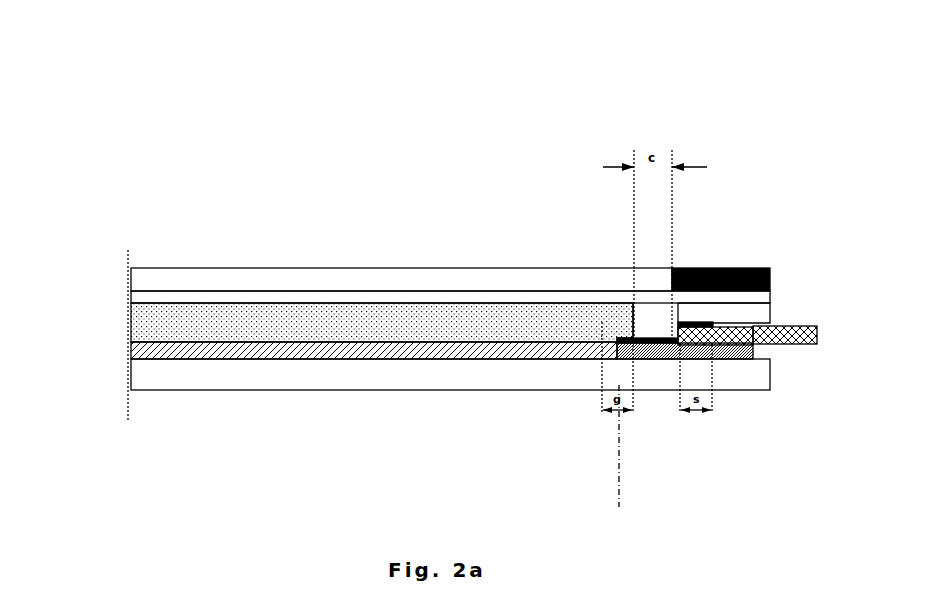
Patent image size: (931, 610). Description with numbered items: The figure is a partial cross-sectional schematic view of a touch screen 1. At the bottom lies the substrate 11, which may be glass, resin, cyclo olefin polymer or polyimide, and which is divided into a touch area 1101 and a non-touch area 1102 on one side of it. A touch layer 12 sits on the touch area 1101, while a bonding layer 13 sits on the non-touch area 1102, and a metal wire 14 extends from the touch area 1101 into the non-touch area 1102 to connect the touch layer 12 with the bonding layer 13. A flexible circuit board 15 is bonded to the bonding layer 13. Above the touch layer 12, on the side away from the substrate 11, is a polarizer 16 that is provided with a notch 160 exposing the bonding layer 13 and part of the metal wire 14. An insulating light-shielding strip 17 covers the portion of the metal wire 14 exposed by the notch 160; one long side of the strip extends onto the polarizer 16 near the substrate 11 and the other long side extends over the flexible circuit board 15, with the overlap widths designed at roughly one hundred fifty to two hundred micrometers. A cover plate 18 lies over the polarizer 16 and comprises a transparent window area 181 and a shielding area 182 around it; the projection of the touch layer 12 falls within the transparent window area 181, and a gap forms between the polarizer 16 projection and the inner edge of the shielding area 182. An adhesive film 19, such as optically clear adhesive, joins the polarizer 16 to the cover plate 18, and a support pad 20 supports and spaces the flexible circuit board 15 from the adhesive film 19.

The touch screen 1 is at (476, 115).
The substrate 11 is at (150, 381).
The touch layer 12 is at (131, 352).
The bonding layer 13 is at (728, 345).
The metal wire 14 is at (662, 359).
The flexible circuit board 15 is at (810, 344).
The polarizer 16 is at (322, 328).
The notch 160 is at (658, 327).
The insulating light-shielding strip 17 is at (650, 337).
The cover plate 18 is at (466, 226).
The transparent window area 181 is at (423, 280).
The shielding area 182 is at (725, 268).
The adhesive film 19 is at (250, 297).
The support pad 20 is at (767, 323).
The touch area 1101 is at (617, 423).
The non-touch area 1102 is at (770, 468).